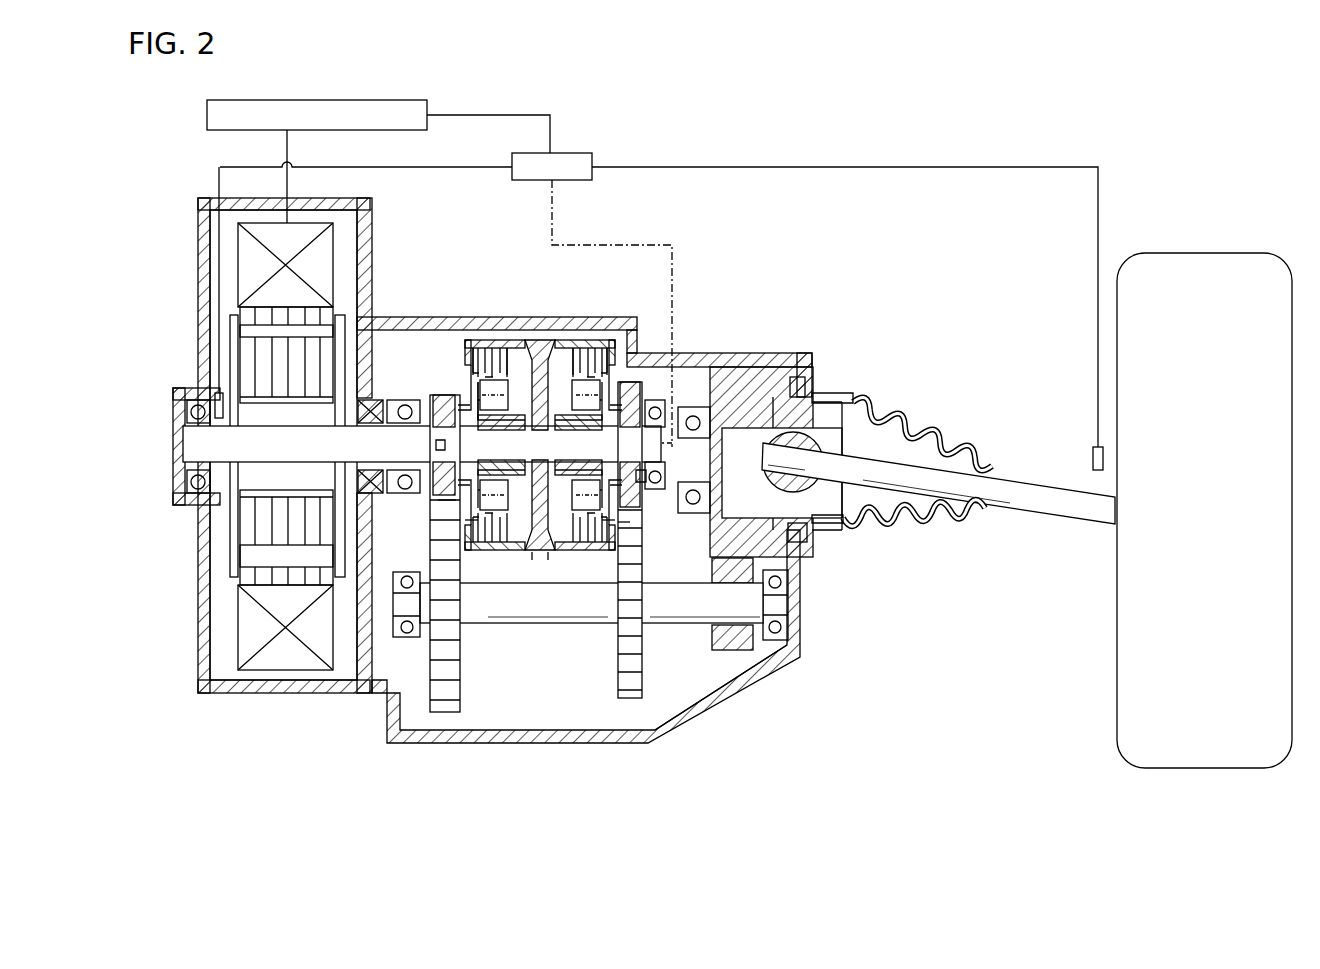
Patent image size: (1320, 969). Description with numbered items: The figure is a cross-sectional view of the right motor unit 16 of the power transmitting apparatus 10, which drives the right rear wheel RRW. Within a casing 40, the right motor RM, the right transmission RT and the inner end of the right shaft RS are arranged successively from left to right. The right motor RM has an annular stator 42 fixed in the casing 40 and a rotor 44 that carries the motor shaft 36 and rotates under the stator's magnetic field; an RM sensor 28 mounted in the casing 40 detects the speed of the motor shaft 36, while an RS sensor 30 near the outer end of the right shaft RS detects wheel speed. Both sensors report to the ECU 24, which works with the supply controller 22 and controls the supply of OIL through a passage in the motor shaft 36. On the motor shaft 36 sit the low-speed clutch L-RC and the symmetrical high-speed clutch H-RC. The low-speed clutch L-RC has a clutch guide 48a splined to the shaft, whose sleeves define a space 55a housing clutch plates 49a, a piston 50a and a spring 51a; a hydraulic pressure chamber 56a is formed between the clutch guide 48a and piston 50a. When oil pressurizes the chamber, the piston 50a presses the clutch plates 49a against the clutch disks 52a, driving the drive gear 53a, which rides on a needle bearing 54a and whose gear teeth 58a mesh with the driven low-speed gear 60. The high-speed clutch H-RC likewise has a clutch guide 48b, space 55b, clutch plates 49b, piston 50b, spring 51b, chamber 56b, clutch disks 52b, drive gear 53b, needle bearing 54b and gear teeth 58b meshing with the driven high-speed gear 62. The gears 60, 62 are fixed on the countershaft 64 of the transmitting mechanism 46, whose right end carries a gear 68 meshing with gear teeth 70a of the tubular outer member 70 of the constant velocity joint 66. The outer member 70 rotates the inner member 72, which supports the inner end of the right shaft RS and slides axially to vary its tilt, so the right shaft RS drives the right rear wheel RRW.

The power transmitting apparatus 10 is at (803, 105).
The right motor unit 16 is at (460, 243).
The supply controller 22 is at (302, 100).
The ECU 24 is at (572, 153).
The RM sensor 28 is at (215, 396).
The RS sensor 30 is at (1091, 460).
The motor shaft 36 is at (205, 446).
The casing 40 is at (758, 353).
The stator 42 is at (333, 251).
The rotor 44 is at (340, 312).
The transmitting mechanism 46 is at (654, 711).
The clutch guide 48a is at (466, 340).
The clutch guide 48b is at (615, 357).
The clutch plates 49a is at (485, 347).
The clutch plates 49b is at (590, 345).
The piston 50a is at (527, 340).
The piston 50b is at (560, 340).
The spring 51a is at (478, 384).
The spring 51b is at (677, 373).
The clutch disks 52a is at (483, 541).
The clutch disks 52b is at (590, 541).
The drive gear 53a is at (465, 522).
The drive gear 53b is at (615, 525).
The needle bearing 54a is at (436, 451).
The needle bearing 54b is at (644, 482).
The space 55a is at (504, 664).
The space 55b is at (577, 664).
The hydraulic pressure chamber 56a is at (537, 553).
The hydraulic pressure chamber 56b is at (545, 553).
The gear teeth 58a is at (443, 501).
The gear teeth 58b is at (628, 524).
The driven low-speed gear 60 is at (460, 696).
The driven high-speed gear 62 is at (640, 659).
The countershaft 64 is at (660, 625).
The constant velocity joint 66 is at (838, 377).
The gear 68 is at (735, 645).
The outer member 70 is at (840, 607).
The gear teeth 70a is at (793, 558).
The inner member 72 is at (836, 497).
The right motor RM is at (183, 232).
The right shaft RS is at (1035, 507).
The right transmission RT is at (733, 694).
The right rear wheel RRW is at (1190, 253).
The oil supply OIL is at (555, 210).
The low-speed clutch L-RC is at (459, 359).
The high-speed clutch H-RC is at (614, 370).